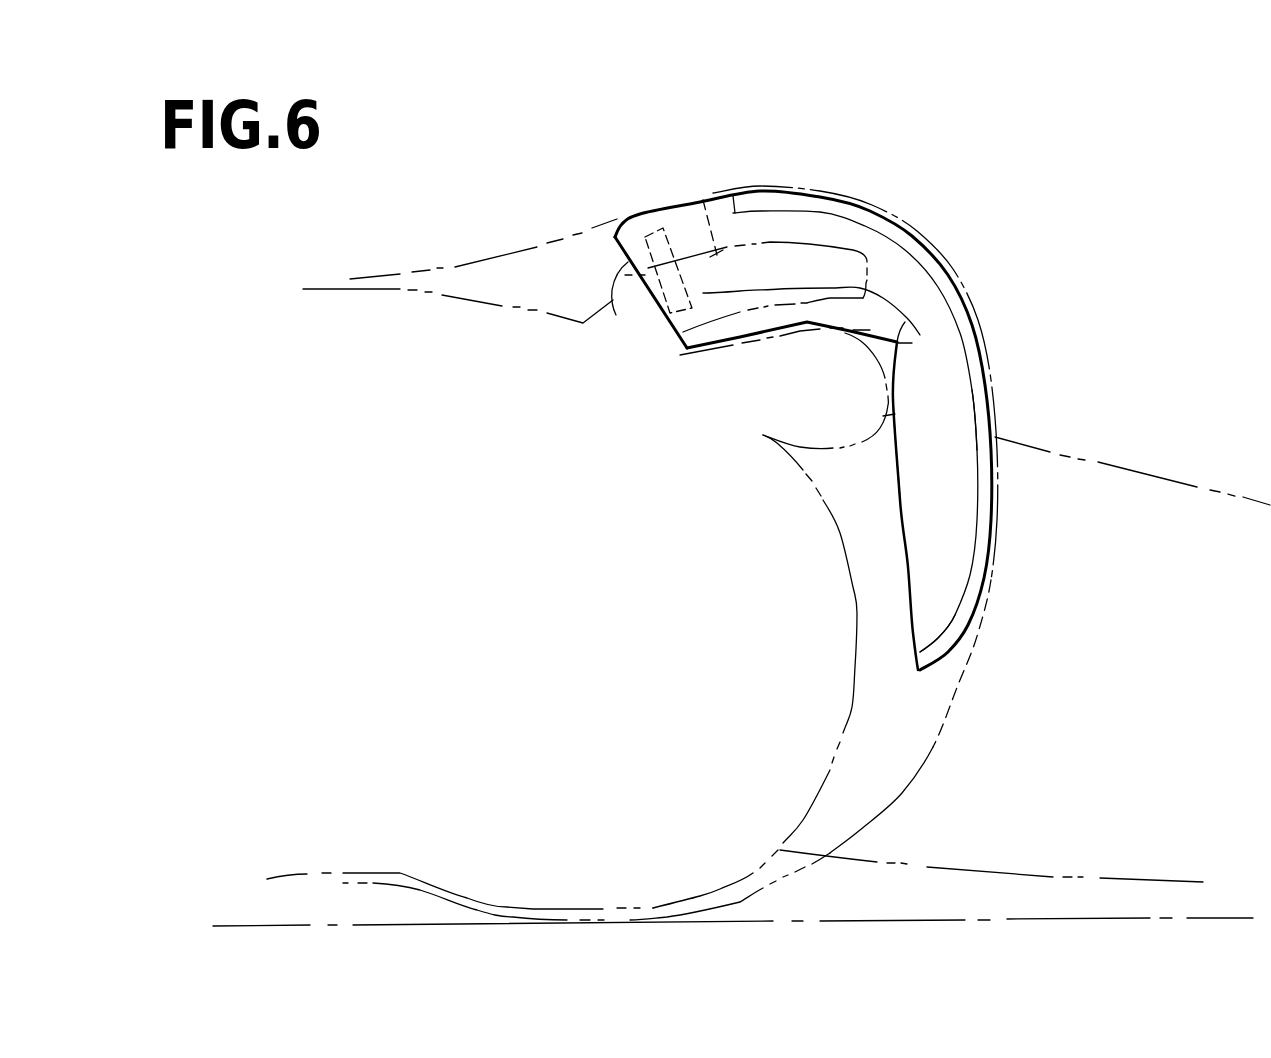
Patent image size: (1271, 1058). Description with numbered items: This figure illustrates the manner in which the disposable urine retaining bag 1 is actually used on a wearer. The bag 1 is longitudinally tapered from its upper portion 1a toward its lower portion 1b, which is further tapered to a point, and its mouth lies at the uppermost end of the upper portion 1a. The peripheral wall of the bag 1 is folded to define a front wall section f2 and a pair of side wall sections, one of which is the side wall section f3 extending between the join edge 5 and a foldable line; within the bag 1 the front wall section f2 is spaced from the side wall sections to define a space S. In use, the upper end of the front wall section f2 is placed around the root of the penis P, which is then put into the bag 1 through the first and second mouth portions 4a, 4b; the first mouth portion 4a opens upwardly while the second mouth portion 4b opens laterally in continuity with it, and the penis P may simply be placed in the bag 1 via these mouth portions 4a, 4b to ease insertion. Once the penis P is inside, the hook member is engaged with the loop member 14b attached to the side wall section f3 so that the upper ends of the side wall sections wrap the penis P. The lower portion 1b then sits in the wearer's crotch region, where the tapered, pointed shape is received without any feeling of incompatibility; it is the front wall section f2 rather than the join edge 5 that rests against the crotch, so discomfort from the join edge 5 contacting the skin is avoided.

The disposable urine retaining bag 1 is at (896, 258).
The upper portion 1a is at (770, 223).
The lower portion 1b is at (957, 569).
The first mouth portion 4a is at (621, 315).
The second mouth portion 4b is at (680, 207).
The join edge 5 is at (973, 352).
The loop member 14b is at (648, 215).
The penis P is at (703, 200).
The space S is at (944, 325).
The front wall section f2 is at (895, 483).
The side wall section f3 is at (953, 433).